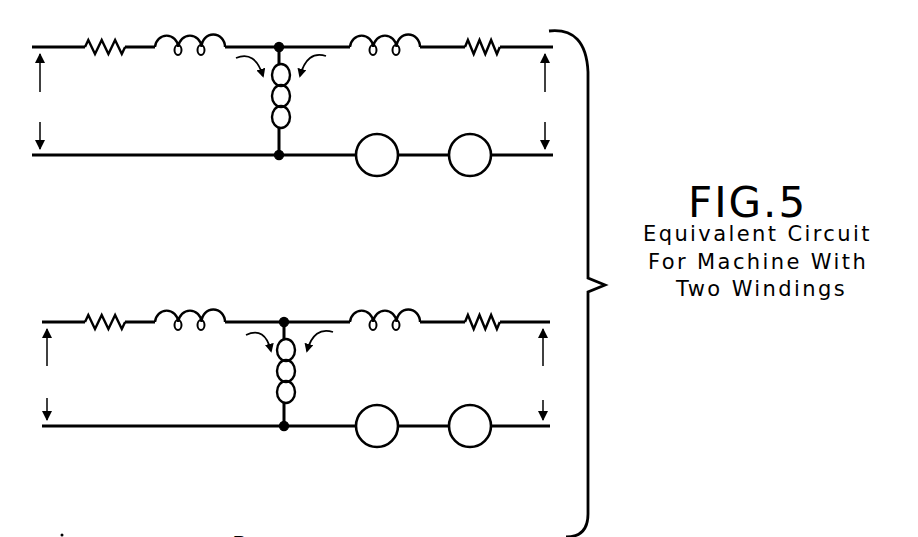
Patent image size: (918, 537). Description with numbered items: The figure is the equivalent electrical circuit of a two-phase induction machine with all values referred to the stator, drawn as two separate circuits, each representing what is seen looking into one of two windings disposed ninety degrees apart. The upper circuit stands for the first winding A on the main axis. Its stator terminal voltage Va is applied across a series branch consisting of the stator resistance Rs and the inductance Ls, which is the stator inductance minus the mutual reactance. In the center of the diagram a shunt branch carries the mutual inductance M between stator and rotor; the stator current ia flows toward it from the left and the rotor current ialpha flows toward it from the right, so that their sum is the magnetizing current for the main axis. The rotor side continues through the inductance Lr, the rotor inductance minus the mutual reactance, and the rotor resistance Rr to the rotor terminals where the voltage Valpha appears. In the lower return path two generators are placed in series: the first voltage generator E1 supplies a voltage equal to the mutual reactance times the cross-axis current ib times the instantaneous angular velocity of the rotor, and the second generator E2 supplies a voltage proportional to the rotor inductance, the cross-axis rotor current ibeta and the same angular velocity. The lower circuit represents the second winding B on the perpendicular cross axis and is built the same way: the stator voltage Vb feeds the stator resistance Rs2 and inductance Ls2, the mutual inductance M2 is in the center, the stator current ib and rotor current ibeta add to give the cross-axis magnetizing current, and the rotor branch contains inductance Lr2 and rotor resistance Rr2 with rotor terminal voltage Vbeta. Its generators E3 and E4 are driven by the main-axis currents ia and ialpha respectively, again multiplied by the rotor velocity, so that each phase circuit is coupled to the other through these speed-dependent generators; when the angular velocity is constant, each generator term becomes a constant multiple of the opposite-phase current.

The stator resistance Rs is at (105, 32).
The stator inductance minus mutual inductance Ls is at (190, 28).
The mutual inductance M is at (296, 96).
The rotor inductance minus mutual inductance Lr is at (385, 28).
The rotor resistance Rr is at (482, 33).
The stator current of winding A ia is at (245, 78).
The rotor current of the main axis ialpha is at (321, 76).
The stator terminal voltage of winding A Va is at (40, 101).
The rotor terminal voltage of the main axis Valpha is at (544, 101).
The first voltage generator E1 is at (410, 225).
The second voltage generator E2 is at (563, 225).
The stator resistance Rs2 is at (105, 307).
The stator inductance minus mutual inductance Ls2 is at (190, 304).
The mutual inductance M2 is at (272, 378).
The rotor inductance minus mutual inductance Lr2 is at (385, 304).
The rotor resistance Rr2 is at (482, 307).
The stator current of winding B ib is at (258, 355).
The rotor current of the cross axis ibeta is at (326, 354).
The stator terminal voltage of winding B Vb is at (52, 374).
The rotor terminal voltage of the cross axis Vbeta is at (543, 374).
The third voltage generator E3 is at (410, 500).
The fourth voltage generator E4 is at (563, 500).